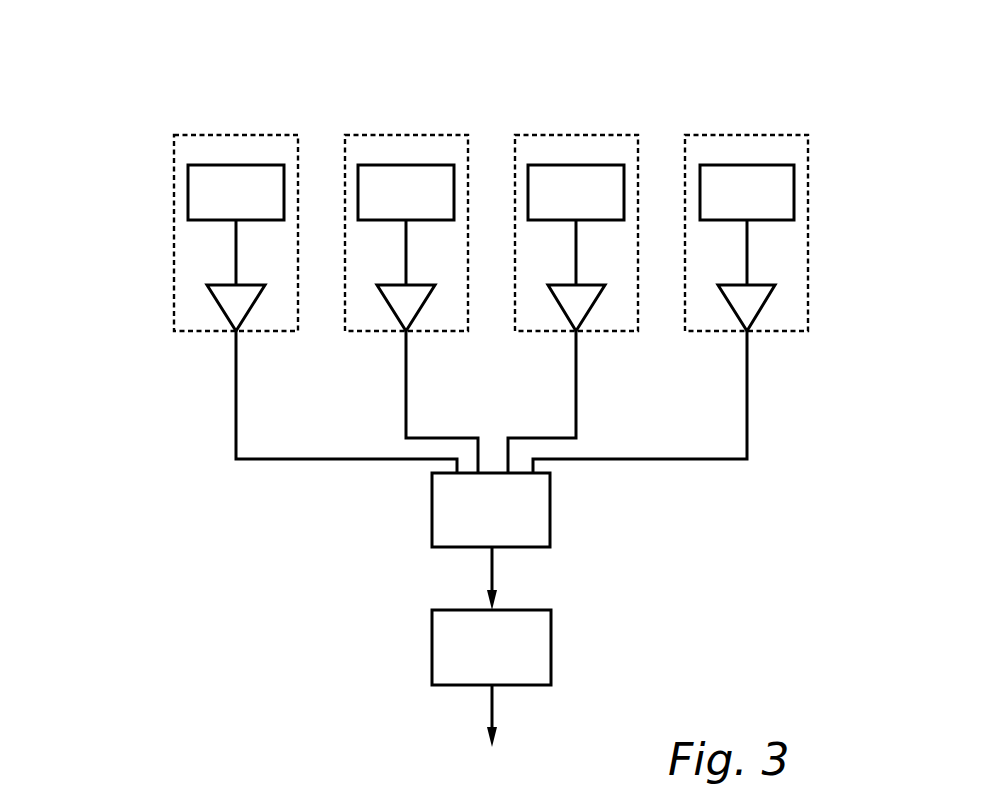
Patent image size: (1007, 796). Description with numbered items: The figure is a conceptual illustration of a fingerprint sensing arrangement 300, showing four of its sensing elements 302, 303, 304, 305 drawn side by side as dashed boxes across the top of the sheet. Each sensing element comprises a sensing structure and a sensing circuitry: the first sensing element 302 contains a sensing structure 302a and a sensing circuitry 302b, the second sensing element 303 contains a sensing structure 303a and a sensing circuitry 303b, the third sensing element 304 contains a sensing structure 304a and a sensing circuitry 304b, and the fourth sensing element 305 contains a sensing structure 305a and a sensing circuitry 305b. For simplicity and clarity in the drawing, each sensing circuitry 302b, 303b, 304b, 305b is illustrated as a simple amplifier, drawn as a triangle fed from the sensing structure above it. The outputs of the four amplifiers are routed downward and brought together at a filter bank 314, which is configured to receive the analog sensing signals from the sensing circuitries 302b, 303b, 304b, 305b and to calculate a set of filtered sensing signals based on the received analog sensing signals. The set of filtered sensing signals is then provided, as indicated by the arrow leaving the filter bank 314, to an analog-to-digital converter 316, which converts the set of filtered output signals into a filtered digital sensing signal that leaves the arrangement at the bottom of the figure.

The fingerprint sensing arrangement 300 is at (128, 86).
The sensing element 302 is at (232, 91).
The sensing structure 302a is at (236, 192).
The sensing circuitry 302b is at (222, 312).
The sensing element 303 is at (402, 91).
The sensing structure 303a is at (406, 192).
The sensing circuitry 303b is at (392, 312).
The sensing element 304 is at (572, 91).
The sensing structure 304a is at (576, 192).
The sensing circuitry 304b is at (562, 312).
The sensing element 305 is at (742, 91).
The sensing structure 305a is at (747, 192).
The sensing circuitry 305b is at (733, 312).
The filter bank 314 is at (551, 545).
The analog-to-digital converter 316 is at (551, 645).